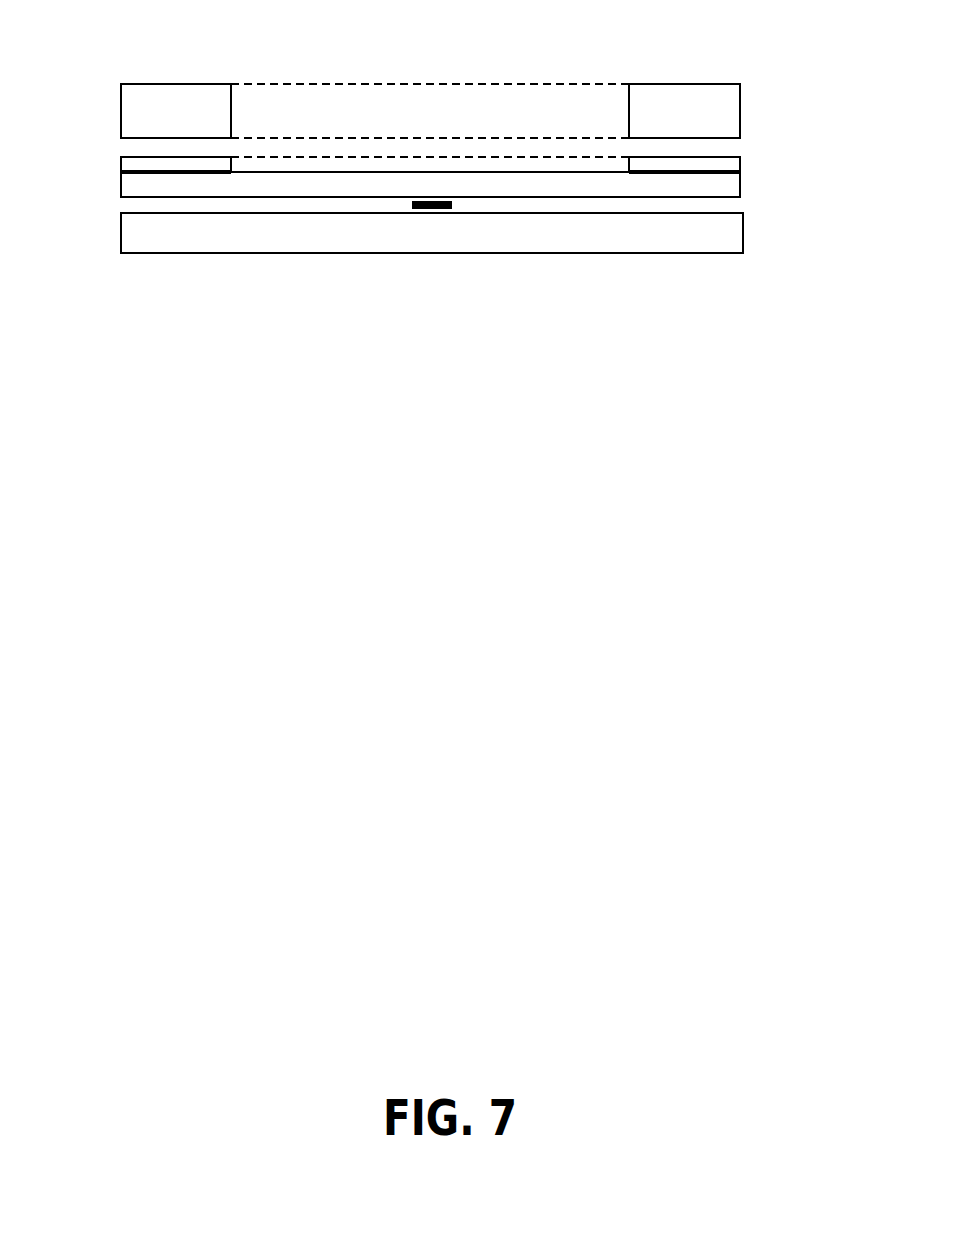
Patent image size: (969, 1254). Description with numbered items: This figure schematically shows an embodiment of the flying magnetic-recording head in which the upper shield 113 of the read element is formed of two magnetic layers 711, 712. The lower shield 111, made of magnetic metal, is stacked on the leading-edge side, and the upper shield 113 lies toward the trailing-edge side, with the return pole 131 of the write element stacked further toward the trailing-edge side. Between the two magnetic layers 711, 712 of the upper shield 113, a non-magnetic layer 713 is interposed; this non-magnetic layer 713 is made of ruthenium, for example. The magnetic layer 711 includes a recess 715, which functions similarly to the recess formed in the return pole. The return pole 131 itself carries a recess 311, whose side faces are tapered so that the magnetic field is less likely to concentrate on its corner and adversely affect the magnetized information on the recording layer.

The lower shield 111 is at (743, 232).
The upper shield 113 is at (509, 171).
The return pole 131 is at (740, 100).
The recess 311 is at (629, 110).
The magnetic layer 711 is at (472, 187).
The magnetic layer 712 is at (740, 158).
The non-magnetic layer 713 is at (121, 172).
The recess 715 is at (232, 169).